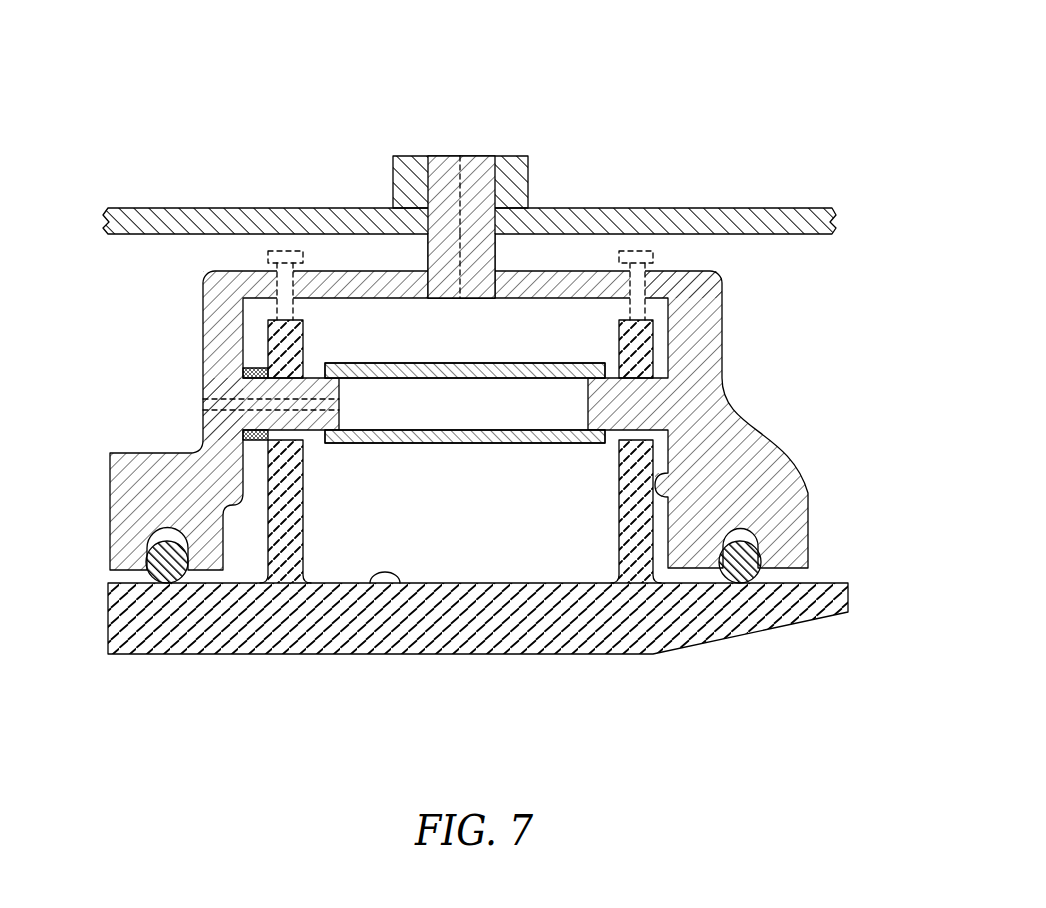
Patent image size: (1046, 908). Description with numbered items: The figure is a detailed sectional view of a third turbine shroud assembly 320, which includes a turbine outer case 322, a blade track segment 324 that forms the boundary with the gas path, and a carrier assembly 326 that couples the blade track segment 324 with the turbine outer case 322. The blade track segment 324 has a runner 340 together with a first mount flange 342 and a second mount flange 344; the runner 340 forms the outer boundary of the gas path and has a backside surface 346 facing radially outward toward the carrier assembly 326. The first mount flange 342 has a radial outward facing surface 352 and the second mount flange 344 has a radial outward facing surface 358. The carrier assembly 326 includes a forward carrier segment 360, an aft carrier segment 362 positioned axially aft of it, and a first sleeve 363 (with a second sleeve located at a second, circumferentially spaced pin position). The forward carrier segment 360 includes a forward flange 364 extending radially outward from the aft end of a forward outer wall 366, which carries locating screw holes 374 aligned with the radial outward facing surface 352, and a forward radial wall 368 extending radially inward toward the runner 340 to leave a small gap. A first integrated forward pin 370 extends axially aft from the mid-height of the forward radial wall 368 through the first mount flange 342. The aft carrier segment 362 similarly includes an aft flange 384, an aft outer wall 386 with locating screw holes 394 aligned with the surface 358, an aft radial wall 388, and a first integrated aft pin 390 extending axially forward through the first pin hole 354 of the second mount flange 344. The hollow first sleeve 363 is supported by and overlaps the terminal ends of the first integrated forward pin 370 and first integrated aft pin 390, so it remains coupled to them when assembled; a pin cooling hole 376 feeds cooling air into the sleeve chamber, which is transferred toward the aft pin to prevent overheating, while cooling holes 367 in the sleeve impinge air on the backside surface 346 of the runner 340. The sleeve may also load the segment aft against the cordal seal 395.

The turbine shroud assembly 320 is at (464, 376).
The turbine outer case 322 is at (563, 155).
The blade track segment 324 is at (478, 652).
The carrier assembly 326 is at (733, 320).
The runner 340 is at (712, 632).
The first mount flange 342 is at (287, 555).
The second mount flange 344 is at (630, 558).
The backside surface 346 is at (380, 575).
The radial outward facing surface 352 is at (273, 313).
The first pin hole 354 is at (637, 435).
The radial outward facing surface 358 is at (660, 297).
The forward carrier segment 360 is at (98, 541).
The aft carrier segment 362 is at (820, 537).
The first sleeve 363 is at (353, 437).
The forward flange 364 is at (443, 165).
The forward outer wall 366 is at (345, 285).
The cooling holes 367 is at (428, 445).
The forward radial wall 368 is at (222, 355).
The first integrated forward pin 370 is at (280, 417).
The locating screw holes 374 is at (275, 283).
The pin cooling hole 376 is at (222, 405).
The aft flange 384 is at (477, 173).
The aft outer wall 386 is at (563, 290).
The aft radial wall 388 is at (693, 417).
The first integrated aft pin 390 is at (655, 408).
The locating screw holes 394 is at (647, 287).
The cordal seal 395 is at (662, 492).